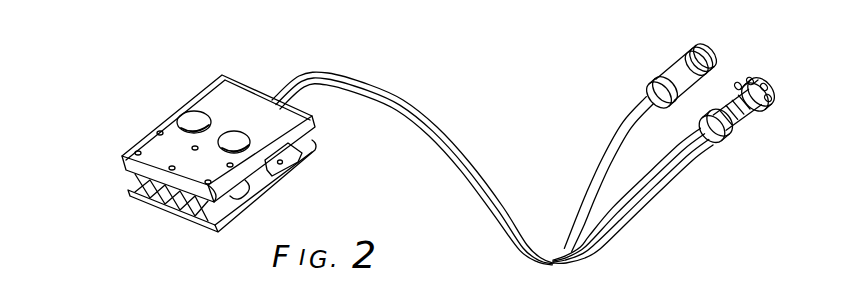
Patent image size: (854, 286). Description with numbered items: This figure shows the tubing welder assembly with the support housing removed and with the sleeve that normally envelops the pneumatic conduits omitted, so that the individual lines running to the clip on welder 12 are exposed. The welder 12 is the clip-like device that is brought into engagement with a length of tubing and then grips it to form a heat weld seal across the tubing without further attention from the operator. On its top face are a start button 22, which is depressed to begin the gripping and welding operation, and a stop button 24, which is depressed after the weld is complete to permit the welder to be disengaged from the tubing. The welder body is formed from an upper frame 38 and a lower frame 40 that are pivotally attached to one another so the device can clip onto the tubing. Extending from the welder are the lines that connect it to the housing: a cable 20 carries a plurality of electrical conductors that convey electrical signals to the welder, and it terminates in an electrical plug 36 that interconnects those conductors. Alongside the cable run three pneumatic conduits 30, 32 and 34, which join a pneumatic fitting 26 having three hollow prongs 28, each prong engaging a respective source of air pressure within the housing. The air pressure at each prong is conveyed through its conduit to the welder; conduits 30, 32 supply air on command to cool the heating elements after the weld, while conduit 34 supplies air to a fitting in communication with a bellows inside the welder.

The clip on welder 12 is at (233, 100).
The cable 20 is at (622, 124).
The start button 22 is at (182, 114).
The stop button 24 is at (240, 144).
The pneumatic fitting 26 is at (735, 143).
The hollow prongs 28 is at (767, 86).
The pneumatic conduit 30 is at (652, 190).
The pneumatic conduit 32 is at (687, 162).
The pneumatic conduit 34 is at (698, 134).
The electrical plug 36 is at (686, 52).
The upper frame 38 is at (170, 150).
The lower frame 40 is at (137, 197).